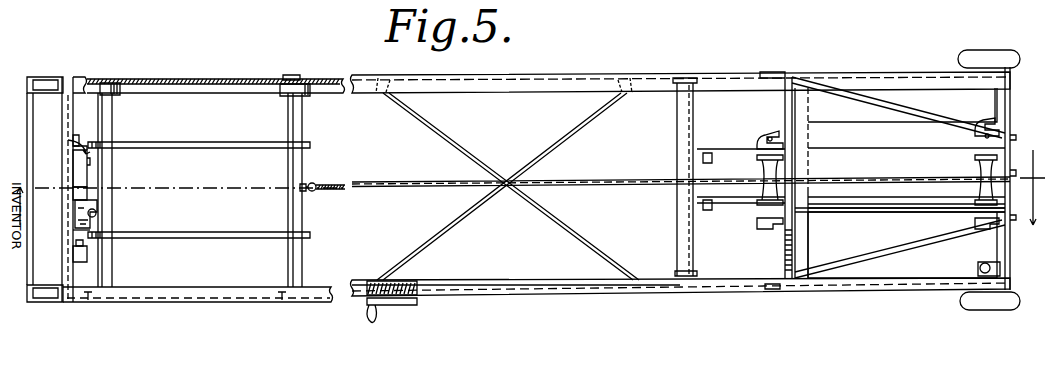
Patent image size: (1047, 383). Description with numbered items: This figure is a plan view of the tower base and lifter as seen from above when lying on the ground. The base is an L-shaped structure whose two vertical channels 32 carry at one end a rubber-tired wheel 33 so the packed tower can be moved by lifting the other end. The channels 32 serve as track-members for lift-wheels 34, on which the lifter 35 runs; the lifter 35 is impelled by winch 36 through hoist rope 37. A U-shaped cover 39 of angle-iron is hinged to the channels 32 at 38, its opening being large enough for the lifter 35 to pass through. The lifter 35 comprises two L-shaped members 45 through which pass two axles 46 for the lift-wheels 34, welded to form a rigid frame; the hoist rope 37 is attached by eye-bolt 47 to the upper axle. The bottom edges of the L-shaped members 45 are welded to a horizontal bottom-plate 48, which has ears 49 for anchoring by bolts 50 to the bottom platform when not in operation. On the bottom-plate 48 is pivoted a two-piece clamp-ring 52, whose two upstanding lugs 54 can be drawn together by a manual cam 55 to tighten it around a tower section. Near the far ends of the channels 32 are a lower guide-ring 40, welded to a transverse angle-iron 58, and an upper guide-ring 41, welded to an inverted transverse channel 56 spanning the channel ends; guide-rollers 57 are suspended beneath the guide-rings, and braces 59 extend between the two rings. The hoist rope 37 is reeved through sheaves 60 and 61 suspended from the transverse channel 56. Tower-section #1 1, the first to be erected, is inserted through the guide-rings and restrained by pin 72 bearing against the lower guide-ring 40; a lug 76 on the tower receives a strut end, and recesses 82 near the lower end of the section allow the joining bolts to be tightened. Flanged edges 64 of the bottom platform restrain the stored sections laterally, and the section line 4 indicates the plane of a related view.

The tower-section # 1 is at (838, 158).
The section line 4 is at (528, 187).
The vertical channel 32 is at (240, 80).
The rubber-tired wheel 33 is at (998, 52).
The lift-wheel 34 is at (110, 84).
The lifter 35 is at (68, 140).
The winch 36 is at (438, 276).
The hoist rope 37 is at (614, 182).
The hinge 38 is at (686, 78).
The U-shaped cover 39 is at (675, 239).
The lower guide-ring 40 is at (785, 106).
The upper guide-ring 41 is at (997, 97).
The L-shaped member 45 is at (237, 141).
The axle 46 is at (118, 122).
The eye-bolt 47 is at (314, 179).
The bottom-plate 48 is at (99, 171).
The ear 49 is at (73, 147).
The bolt 50 is at (73, 137).
The clamp-ring 52 is at (88, 180).
The upstanding lug 54 is at (98, 212).
The manual cam 55 is at (90, 210).
The inverted transverse channel 56 is at (1012, 109).
The guide-roller 57 is at (744, 156).
The transverse angle-iron 58 is at (814, 241).
The brace 59 is at (899, 107).
The sheave 60 is at (996, 265).
The sheave 61 is at (980, 175).
The flanged edge 64 is at (78, 262).
The pin 72 is at (797, 214).
The lug 76 is at (776, 70).
The recess 82 is at (703, 155).